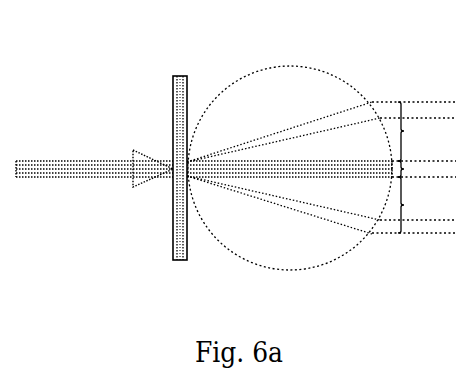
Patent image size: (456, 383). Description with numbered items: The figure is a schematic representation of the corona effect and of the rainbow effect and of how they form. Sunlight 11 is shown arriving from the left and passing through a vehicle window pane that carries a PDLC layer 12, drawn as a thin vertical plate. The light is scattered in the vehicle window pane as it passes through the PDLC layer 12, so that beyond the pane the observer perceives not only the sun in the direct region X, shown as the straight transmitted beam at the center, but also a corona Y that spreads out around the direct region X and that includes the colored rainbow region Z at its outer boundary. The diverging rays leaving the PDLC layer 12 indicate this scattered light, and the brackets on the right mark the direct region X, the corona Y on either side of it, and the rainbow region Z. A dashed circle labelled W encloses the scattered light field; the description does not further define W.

The sunlight 11 is at (99, 158).
The PDLC layer 12 is at (178, 76).
The angular range of diffracted light W is at (338, 80).
The direct region X is at (321, 169).
The corona Y is at (414, 167).
The colored rainbow region Z is at (372, 106).